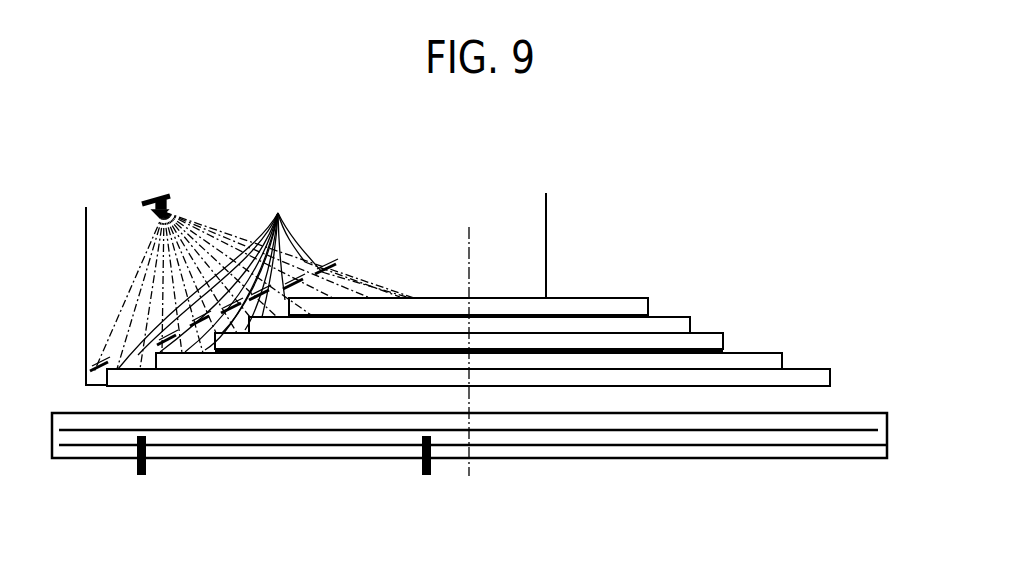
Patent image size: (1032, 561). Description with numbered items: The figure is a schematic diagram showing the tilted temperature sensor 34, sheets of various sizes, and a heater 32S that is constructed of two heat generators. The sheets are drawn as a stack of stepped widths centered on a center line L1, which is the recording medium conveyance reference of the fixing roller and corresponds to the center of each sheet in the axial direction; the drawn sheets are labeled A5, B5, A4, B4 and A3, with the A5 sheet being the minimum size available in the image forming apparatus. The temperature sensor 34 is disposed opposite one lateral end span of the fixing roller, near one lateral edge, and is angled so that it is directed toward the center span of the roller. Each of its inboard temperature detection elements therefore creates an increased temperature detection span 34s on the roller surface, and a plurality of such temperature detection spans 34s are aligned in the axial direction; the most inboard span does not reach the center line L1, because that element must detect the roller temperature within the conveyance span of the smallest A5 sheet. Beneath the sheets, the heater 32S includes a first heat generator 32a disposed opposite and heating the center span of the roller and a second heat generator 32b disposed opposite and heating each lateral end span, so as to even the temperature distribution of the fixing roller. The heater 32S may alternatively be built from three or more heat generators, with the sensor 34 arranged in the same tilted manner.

The temperature sensor 34 is at (173, 187).
The temperature detection span 34s is at (250, 281).
The center line L1 is at (470, 265).
The first heat generator 32a is at (690, 433).
The second heat generator 32b is at (668, 505).
The heater 32S is at (469, 477).
The A5 size sheet A5 is at (648, 298).
The B5 sheet (182mm) B5 is at (690, 318).
The A4 sheet (210mm) A4 is at (723, 333).
The B4 sheet (257mm) B4 is at (782, 353).
The A3 sheet (297mm) A3 is at (830, 370).